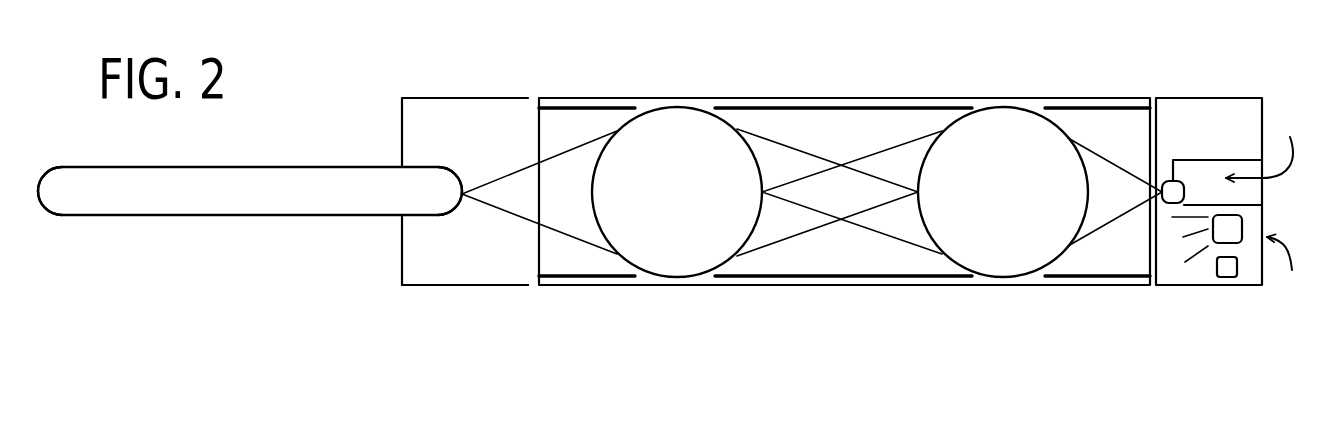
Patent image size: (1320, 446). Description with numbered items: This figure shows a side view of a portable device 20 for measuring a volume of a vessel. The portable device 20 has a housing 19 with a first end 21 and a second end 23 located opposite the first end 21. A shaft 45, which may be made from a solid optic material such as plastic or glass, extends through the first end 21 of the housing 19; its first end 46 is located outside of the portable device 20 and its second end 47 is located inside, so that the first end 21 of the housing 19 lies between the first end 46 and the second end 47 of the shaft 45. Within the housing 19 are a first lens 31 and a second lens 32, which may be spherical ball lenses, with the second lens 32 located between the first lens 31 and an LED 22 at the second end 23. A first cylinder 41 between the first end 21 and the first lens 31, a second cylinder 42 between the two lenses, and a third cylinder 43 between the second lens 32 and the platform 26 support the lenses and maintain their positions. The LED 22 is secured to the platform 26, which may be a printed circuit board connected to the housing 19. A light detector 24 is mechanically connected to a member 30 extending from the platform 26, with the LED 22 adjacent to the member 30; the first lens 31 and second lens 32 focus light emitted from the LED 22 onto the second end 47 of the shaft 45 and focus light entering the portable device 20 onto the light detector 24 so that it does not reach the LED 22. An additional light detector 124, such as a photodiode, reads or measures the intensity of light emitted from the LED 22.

The housing 19 is at (505, 287).
The portable device 20 is at (381, 61).
The first end 21 is at (399, 264).
The LED 22 is at (1237, 236).
The second end 23 is at (1183, 288).
The light detector 24 is at (1183, 179).
The platform 26 is at (1286, 266).
The member 30 is at (1265, 144).
The first lens 31 is at (679, 249).
The second lens 32 is at (1002, 239).
The first cylinder 41 is at (575, 106).
The second cylinder 42 is at (827, 106).
The third cylinder 43 is at (1085, 106).
The shaft 45 is at (304, 164).
The first end of shaft 46 is at (67, 164).
The second end of shaft 47 is at (442, 163).
The additional light detector 124 is at (1225, 282).